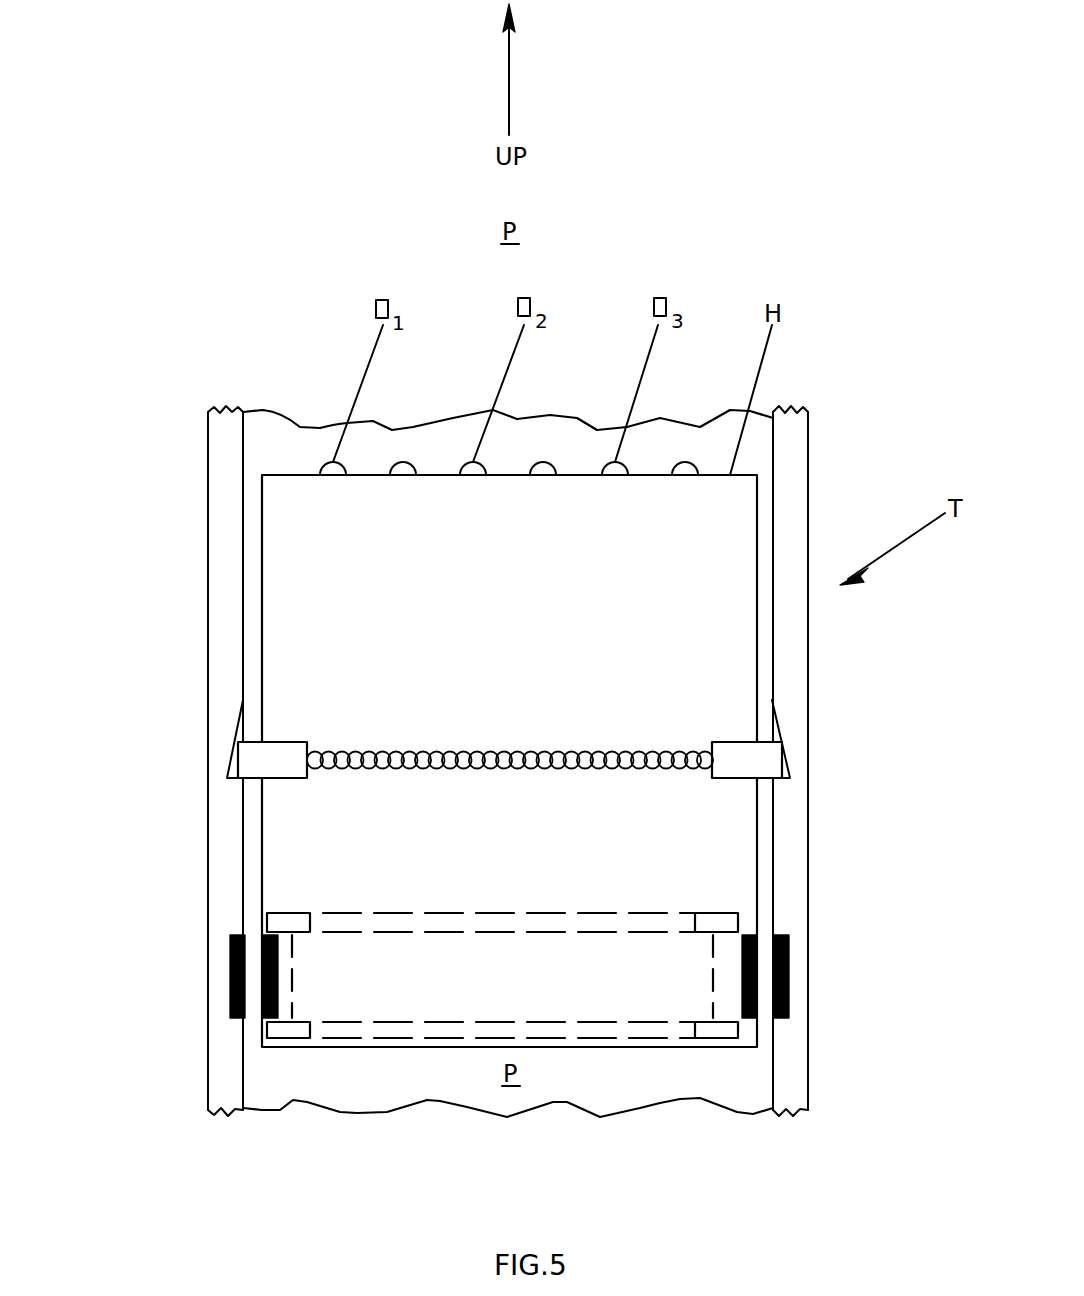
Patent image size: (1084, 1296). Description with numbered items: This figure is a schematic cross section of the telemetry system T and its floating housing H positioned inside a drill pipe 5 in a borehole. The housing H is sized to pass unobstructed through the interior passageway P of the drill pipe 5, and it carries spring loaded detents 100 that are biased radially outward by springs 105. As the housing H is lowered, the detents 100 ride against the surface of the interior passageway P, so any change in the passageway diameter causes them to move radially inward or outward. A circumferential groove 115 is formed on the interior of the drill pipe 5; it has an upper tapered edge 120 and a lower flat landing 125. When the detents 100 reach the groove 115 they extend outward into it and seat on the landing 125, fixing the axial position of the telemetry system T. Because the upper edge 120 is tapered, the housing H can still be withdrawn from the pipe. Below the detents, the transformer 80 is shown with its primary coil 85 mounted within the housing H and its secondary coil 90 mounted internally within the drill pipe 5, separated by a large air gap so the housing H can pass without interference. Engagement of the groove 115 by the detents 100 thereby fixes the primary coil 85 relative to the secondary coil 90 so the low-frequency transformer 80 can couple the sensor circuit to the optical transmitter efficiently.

The drill pipe 5 is at (208, 505).
The transformer 80 is at (516, 990).
The primary coil 85 is at (757, 1010).
The secondary coil 90 is at (230, 973).
The spring loaded detent 100 is at (280, 742).
The spring 105 is at (443, 752).
The circumferential groove 115 is at (222, 750).
The upper tapered edge 120 is at (782, 728).
The lower flat landing 125 is at (775, 782).